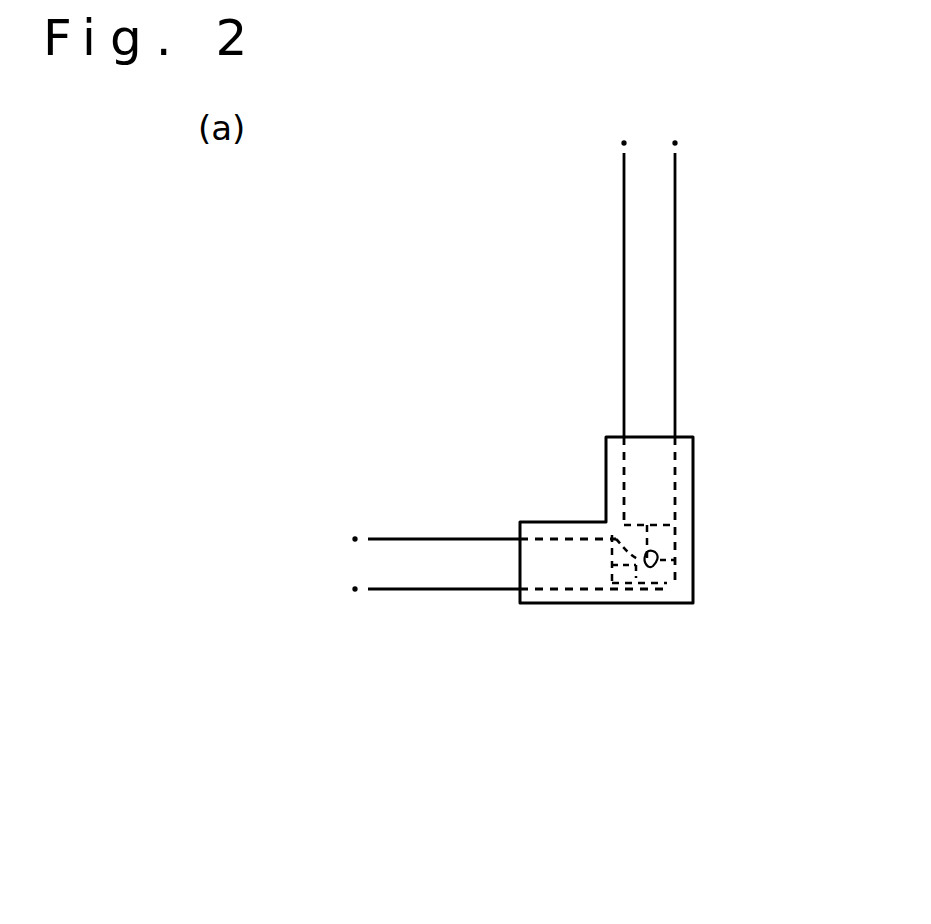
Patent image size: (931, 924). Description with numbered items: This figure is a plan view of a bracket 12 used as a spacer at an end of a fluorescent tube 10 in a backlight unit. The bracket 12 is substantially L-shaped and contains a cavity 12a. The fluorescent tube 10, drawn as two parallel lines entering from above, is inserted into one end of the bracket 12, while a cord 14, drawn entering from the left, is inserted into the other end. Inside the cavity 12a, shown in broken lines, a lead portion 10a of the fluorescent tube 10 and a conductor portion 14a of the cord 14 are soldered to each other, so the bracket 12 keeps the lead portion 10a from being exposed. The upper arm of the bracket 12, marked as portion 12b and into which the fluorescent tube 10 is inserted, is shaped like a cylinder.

The fluorescent tube 10 is at (655, 330).
The lead portion 10a is at (660, 542).
The bracket 12 is at (572, 480).
The cavity 12a is at (703, 587).
The portion 12b is at (710, 435).
The cord 14 is at (415, 575).
The conductor portion 14a is at (618, 578).